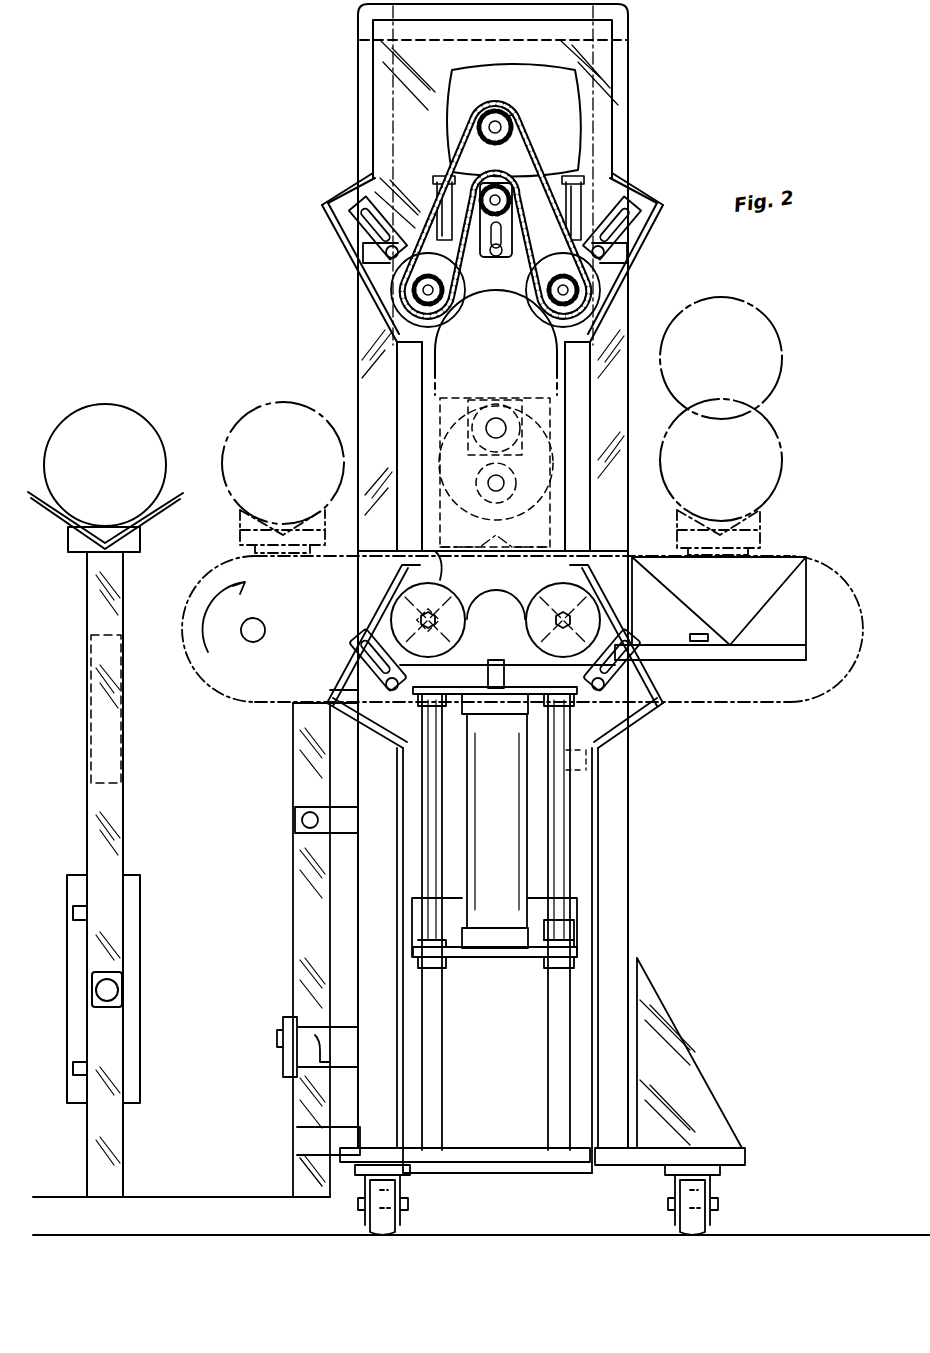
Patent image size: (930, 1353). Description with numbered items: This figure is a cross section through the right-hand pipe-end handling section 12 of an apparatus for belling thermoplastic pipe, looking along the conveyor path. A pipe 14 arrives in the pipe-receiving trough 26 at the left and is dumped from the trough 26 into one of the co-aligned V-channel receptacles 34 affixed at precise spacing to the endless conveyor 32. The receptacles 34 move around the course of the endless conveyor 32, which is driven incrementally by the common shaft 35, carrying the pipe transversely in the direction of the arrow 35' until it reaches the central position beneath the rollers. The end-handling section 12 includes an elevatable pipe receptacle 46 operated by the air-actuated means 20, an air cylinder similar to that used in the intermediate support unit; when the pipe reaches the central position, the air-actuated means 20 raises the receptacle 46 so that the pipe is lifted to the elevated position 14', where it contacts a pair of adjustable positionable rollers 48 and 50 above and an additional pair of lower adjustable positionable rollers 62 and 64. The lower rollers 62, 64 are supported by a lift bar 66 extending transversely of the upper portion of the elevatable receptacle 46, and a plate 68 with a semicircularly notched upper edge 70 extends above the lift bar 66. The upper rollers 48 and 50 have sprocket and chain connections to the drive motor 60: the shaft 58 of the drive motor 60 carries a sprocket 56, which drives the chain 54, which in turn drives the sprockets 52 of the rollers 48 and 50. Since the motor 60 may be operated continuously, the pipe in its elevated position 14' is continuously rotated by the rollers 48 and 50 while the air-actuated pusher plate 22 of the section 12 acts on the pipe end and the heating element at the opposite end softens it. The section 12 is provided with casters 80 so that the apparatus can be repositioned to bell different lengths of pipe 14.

The right-hand pipe-end handling section 12 is at (692, 105).
The pipe 14 is at (113, 457).
The elevated position of pipe 14' is at (745, 409).
The air-actuated means 20 is at (512, 838).
The air-actuated pusher plate 22 is at (580, 764).
The pipe-receiving trough 26 is at (163, 512).
The endless conveyor 32 is at (835, 583).
The receptacles 34 is at (245, 527).
The common shaft 35 is at (233, 630).
The arrow 35' is at (283, 429).
The elevatable pipe receptacle 46 is at (497, 668).
The adjustable positionable roller 48 is at (408, 318).
The adjustable positionable roller 50 is at (598, 296).
The sprockets 52 is at (605, 282).
The chain 54 is at (556, 205).
The sprocket 56 is at (508, 152).
The shaft of drive motor 58 is at (500, 125).
The drive motor 60 is at (562, 82).
The adjustable positionable roller 62 is at (402, 604).
The adjustable positionable roller 64 is at (590, 616).
The lift bar 66 is at (682, 662).
The plate 68 is at (474, 612).
The semicircularly notched upper edge 70 is at (438, 545).
The casters 80 is at (398, 1228).